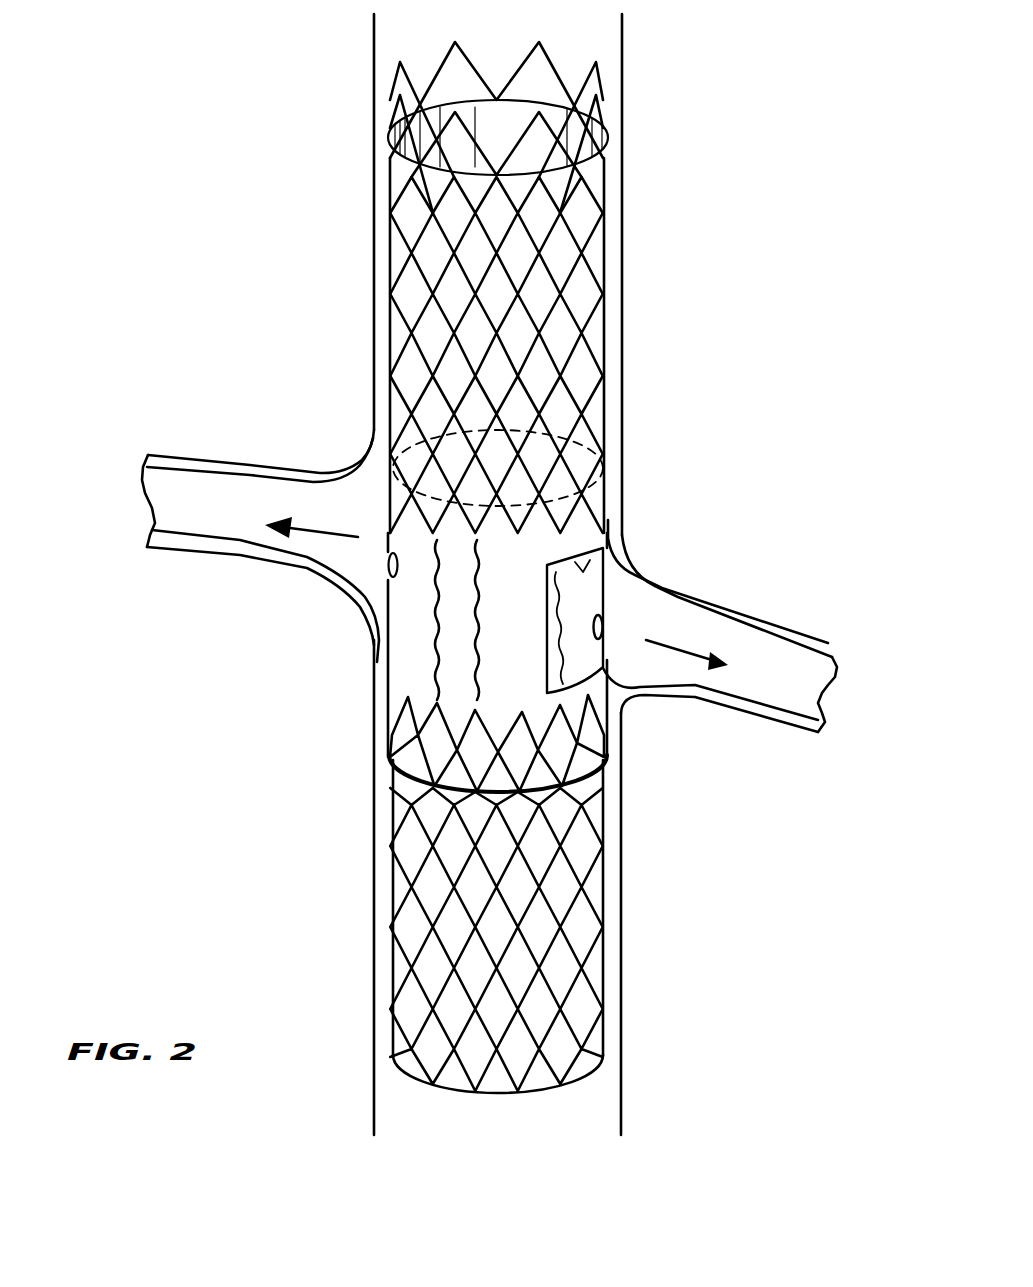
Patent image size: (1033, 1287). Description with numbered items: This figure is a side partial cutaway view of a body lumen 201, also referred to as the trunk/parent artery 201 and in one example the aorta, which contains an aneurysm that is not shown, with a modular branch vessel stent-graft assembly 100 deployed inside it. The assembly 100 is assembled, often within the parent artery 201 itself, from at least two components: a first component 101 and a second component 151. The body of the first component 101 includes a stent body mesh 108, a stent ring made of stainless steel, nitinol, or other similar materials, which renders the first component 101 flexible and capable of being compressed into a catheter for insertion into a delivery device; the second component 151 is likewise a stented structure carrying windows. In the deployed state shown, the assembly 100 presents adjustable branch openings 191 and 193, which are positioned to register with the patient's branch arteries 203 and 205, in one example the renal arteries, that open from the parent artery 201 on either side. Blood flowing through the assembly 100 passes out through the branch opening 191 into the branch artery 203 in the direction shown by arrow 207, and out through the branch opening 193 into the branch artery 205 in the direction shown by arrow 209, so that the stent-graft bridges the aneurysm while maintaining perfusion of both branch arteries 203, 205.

The modular branch vessel stent-graft assembly 100 is at (593, 541).
The first component 101 is at (576, 285).
The stent body mesh 108 is at (570, 1002).
The second component 151 is at (558, 884).
The adjustable branch opening 191 is at (390, 550).
The adjustable branch opening 193 is at (596, 607).
The body lumen 201 is at (622, 108).
The branch artery 203 is at (272, 460).
The branch artery 205 is at (772, 637).
The arrow 207 is at (336, 535).
The arrow 209 is at (677, 648).